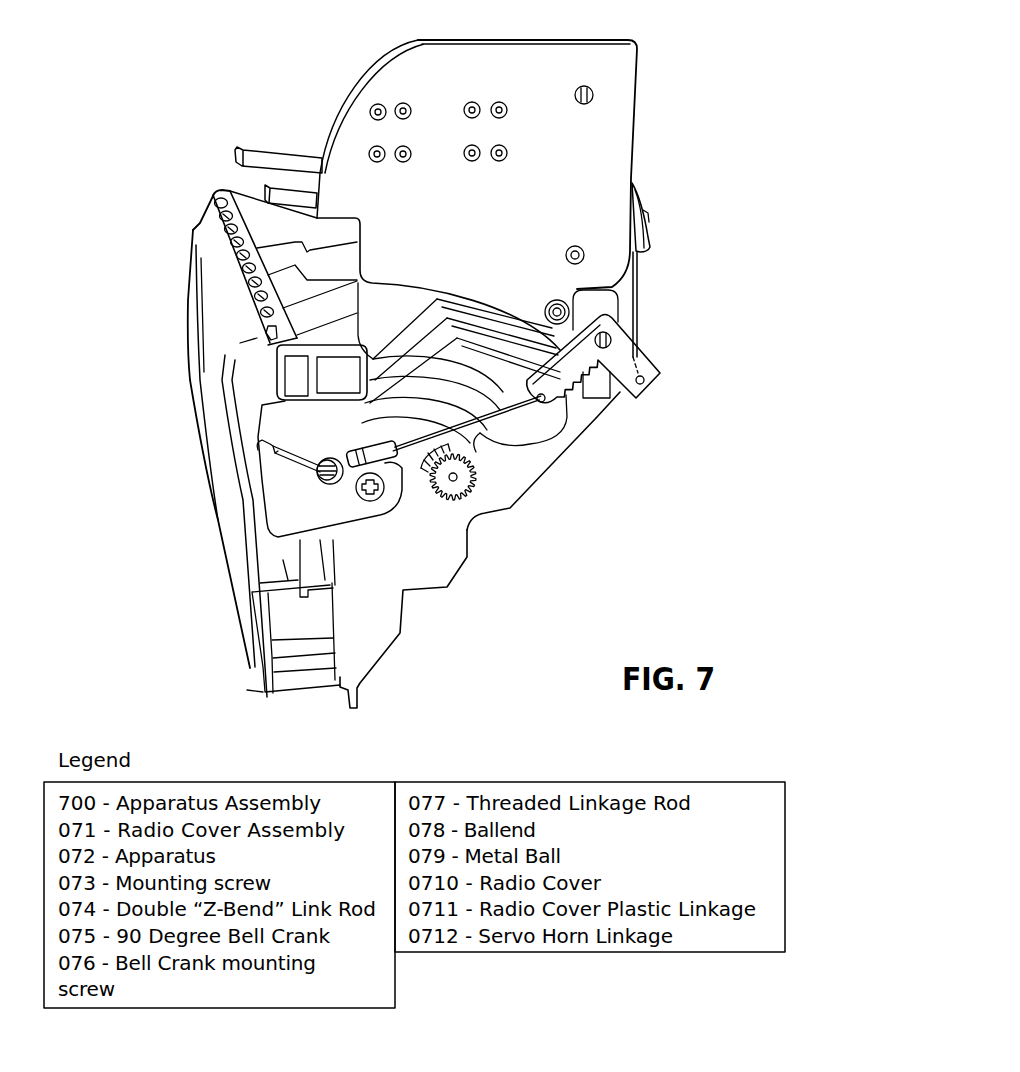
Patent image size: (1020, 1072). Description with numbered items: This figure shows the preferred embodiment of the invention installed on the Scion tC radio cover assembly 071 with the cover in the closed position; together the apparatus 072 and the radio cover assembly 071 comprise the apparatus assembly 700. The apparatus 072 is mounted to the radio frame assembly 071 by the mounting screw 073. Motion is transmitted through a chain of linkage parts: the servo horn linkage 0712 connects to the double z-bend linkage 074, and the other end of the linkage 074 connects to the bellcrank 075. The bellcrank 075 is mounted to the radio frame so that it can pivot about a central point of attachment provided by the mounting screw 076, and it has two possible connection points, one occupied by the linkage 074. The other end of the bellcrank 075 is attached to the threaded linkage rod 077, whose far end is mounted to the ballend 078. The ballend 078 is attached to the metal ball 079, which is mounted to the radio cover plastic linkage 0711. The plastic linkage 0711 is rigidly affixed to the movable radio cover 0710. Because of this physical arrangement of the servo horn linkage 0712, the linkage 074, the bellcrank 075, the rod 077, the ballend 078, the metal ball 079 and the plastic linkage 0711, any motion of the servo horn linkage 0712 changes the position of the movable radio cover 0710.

The apparatus assembly 700 is at (686, 640).
The radio cover assembly 071 is at (188, 153).
The apparatus 072 is at (687, 176).
The mounting screw 073 is at (570, 313).
The double z-bend linkage 074 is at (638, 277).
The bellcrank 075 is at (660, 375).
The mounting screw 076 is at (604, 350).
The threaded linkage rod 077 is at (480, 428).
The ballend 078 is at (388, 468).
The metal ball 079 is at (318, 476).
The radio cover 0710 is at (212, 397).
The radio cover plastic linkage 0711 is at (290, 428).
The servo horn linkage 0712 is at (643, 212).